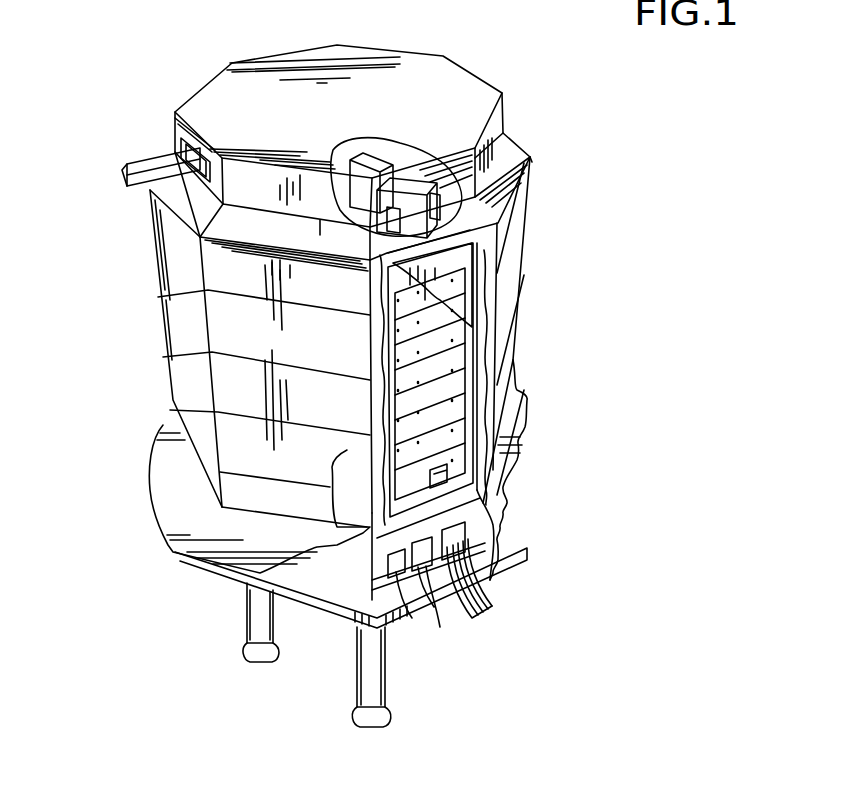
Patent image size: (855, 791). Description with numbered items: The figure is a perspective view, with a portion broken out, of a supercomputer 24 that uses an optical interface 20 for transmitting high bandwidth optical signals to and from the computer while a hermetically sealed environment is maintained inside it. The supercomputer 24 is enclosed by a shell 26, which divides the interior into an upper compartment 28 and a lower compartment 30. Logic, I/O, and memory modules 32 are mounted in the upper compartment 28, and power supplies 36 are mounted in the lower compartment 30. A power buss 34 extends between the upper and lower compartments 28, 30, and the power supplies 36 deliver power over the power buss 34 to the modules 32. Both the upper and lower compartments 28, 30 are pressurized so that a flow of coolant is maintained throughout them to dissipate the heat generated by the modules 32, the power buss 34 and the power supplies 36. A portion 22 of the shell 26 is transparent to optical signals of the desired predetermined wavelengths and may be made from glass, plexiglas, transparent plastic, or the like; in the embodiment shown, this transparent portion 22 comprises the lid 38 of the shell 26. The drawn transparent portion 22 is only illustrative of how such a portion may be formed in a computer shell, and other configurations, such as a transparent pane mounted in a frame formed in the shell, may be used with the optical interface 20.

The optical interface 20 is at (134, 161).
The transparent portion 22 is at (175, 133).
The supercomputer 24 is at (532, 197).
The shell 26 is at (172, 235).
The upper compartment 28 is at (486, 318).
The lower compartment 30 is at (455, 513).
The logic, I/O, and memory modules 32 is at (410, 180).
The power buss 34 is at (532, 153).
The power supplies 36 is at (436, 417).
The lid 38 is at (263, 183).